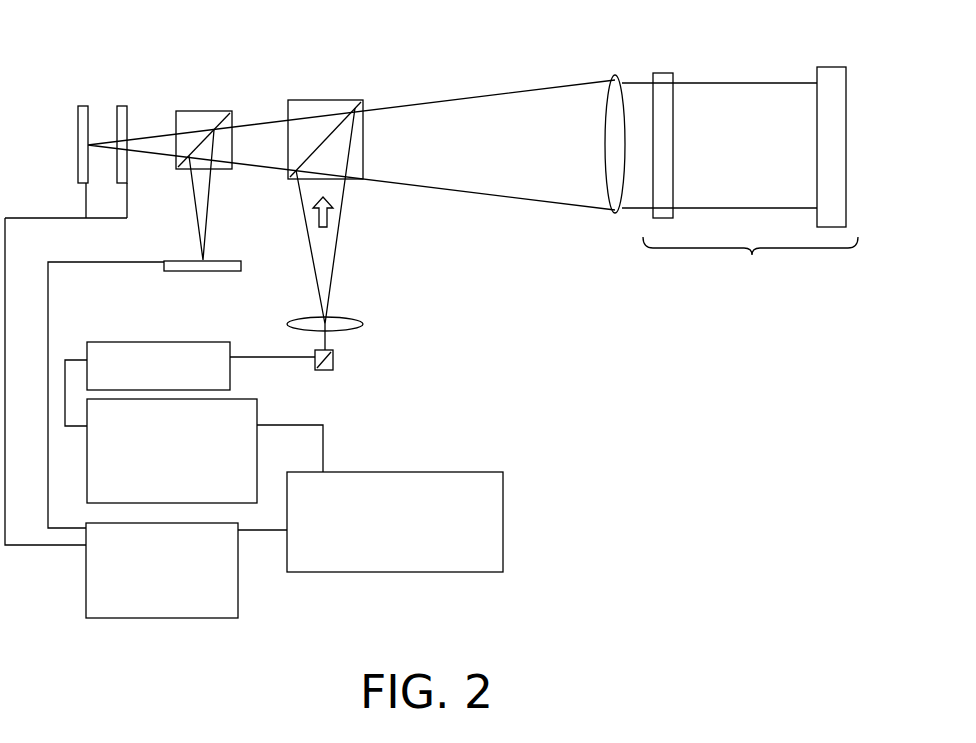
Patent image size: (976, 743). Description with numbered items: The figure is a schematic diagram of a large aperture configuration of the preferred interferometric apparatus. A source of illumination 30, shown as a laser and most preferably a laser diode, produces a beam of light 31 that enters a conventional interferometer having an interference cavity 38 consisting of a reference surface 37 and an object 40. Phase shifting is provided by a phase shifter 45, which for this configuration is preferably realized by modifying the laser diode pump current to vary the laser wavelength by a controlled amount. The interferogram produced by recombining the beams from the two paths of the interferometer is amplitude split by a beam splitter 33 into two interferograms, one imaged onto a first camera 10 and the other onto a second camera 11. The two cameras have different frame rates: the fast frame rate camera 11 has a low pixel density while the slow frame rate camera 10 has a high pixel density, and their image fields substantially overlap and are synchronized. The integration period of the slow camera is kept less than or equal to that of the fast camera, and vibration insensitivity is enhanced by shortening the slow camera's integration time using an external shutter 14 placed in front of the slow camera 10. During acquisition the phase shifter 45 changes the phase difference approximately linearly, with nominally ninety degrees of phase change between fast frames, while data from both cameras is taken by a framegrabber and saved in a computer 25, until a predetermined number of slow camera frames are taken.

The first camera 10 is at (80, 127).
The external shutter 14 is at (122, 127).
The beam splitter 33 is at (204, 120).
The beam of light 31 is at (43, 582).
The reference surface 37 is at (662, 129).
The object 40 is at (832, 129).
The interference cavity 38 is at (750, 264).
The second camera 11 is at (184, 272).
The source of illumination 30 is at (217, 342).
The phase shifter 45 is at (258, 418).
The computer 25 is at (503, 520).